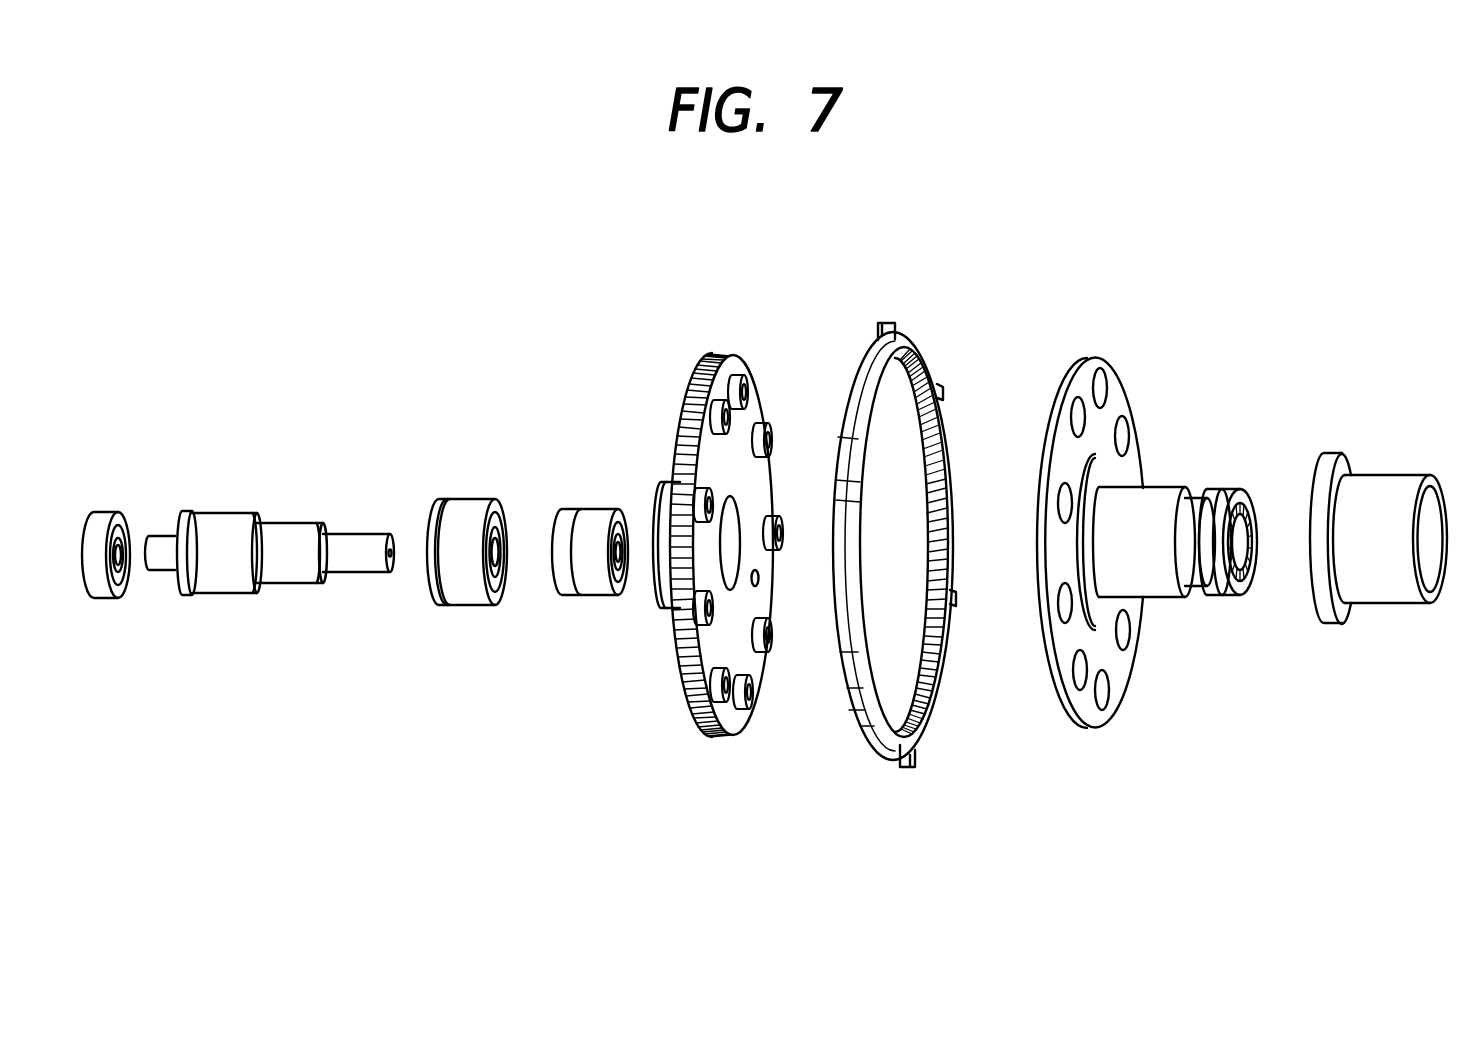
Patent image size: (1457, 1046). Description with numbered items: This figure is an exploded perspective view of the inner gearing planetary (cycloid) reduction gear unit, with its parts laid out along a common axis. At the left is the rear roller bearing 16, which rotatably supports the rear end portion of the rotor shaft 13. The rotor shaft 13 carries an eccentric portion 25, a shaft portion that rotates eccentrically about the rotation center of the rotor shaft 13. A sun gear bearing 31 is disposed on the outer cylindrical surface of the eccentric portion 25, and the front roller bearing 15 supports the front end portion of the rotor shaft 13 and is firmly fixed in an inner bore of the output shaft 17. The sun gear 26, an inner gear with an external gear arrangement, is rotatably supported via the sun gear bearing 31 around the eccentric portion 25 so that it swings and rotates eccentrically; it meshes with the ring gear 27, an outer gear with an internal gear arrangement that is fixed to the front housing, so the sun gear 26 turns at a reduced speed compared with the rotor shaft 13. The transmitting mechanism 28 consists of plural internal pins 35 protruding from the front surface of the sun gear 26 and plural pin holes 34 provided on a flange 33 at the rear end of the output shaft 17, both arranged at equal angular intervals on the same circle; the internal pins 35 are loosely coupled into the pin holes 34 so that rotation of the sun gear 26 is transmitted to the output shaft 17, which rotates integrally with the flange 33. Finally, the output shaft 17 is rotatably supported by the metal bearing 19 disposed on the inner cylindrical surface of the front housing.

The rotor shaft 13 is at (269, 562).
The front roller bearing 15 is at (630, 481).
The rear roller bearing 16 is at (100, 587).
The output shaft 17 is at (1152, 493).
The metal bearing 19 is at (1375, 485).
The eccentric portion 25 is at (323, 488).
The sun gear 26 is at (731, 525).
The ring gear 27 is at (907, 768).
The transmitting mechanism 28 is at (772, 226).
The sun gear bearing 31 is at (508, 469).
The flange 33 is at (1147, 507).
The pin holes 34 is at (1130, 425).
The internal pins 35 is at (763, 427).